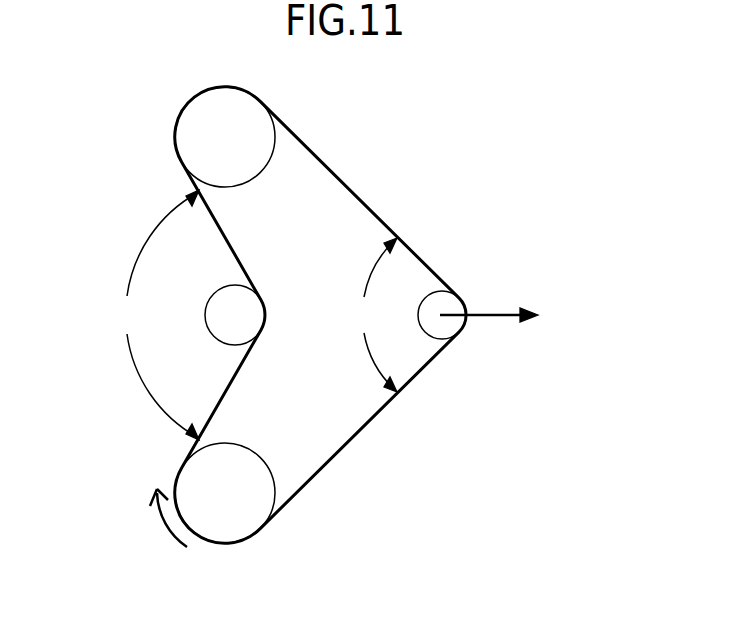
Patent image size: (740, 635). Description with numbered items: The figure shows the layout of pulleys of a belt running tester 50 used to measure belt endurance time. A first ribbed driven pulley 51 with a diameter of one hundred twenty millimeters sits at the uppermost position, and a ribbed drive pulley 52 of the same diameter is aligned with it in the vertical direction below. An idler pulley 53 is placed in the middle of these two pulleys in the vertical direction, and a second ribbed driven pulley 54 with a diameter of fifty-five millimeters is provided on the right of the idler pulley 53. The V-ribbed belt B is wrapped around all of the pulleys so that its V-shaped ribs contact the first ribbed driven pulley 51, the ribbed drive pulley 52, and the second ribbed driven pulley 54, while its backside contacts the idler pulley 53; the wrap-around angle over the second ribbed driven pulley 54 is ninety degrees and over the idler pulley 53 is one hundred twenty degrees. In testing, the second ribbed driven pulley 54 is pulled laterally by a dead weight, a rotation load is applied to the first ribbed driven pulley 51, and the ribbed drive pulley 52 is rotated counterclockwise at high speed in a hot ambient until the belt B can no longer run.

The belt running tester 50 is at (463, 197).
The first ribbed driven pulley 51 is at (197, 122).
The ribbed drive pulley 52 is at (197, 477).
The idler pulley 53 is at (219, 313).
The second ribbed driven pulley 54 is at (448, 327).
The V-ribbed belt B is at (355, 433).